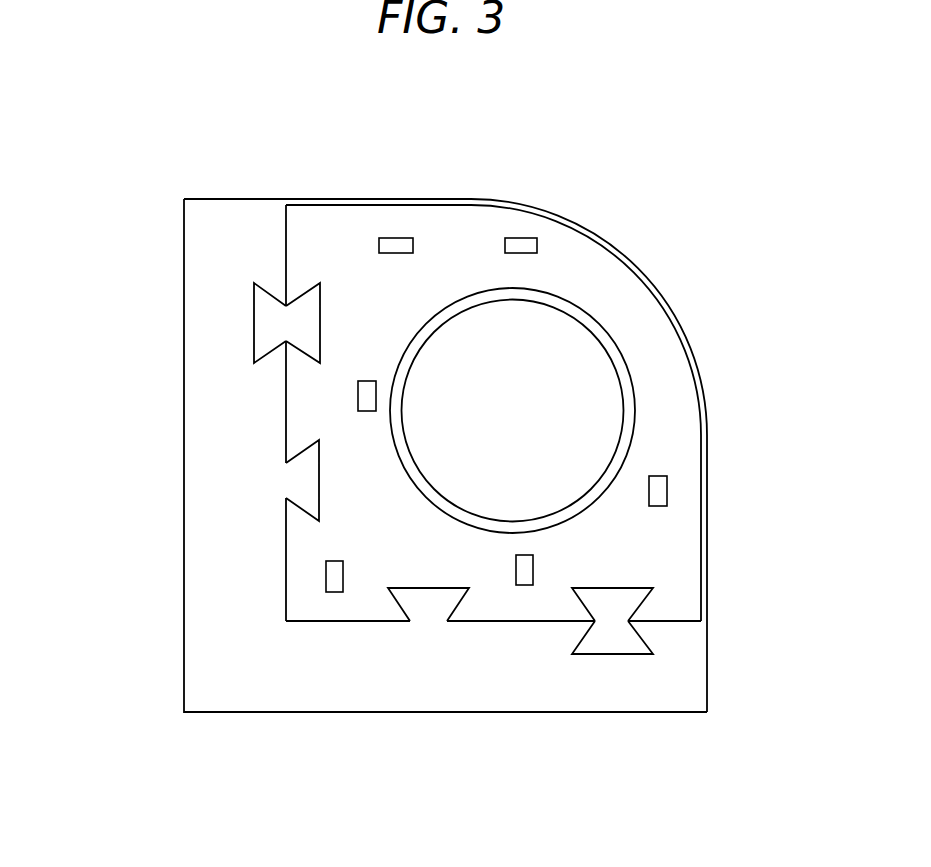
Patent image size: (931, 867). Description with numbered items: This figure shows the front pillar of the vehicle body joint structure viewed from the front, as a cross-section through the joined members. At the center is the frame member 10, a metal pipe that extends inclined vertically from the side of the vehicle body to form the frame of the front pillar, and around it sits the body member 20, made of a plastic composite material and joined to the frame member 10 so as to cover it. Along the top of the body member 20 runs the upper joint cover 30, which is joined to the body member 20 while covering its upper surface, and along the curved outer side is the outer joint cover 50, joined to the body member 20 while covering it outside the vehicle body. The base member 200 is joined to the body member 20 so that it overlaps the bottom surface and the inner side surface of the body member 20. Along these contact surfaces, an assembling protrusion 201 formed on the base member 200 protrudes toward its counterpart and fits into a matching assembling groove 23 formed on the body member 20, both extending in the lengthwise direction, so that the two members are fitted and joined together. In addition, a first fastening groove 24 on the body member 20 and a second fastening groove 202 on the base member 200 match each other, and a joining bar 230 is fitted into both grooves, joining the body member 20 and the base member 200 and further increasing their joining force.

The frame member 10 is at (615, 357).
The body member 20 is at (602, 282).
The assembling groove 23 is at (320, 498).
The first fastening groove 24 is at (320, 337).
The upper joint cover 30 is at (397, 199).
The outer joint cover 50 is at (700, 388).
The base member 200 is at (207, 643).
The assembling protrusion 201 is at (303, 480).
The second fastening groove 202 is at (252, 305).
The joining bar 230 is at (268, 338).